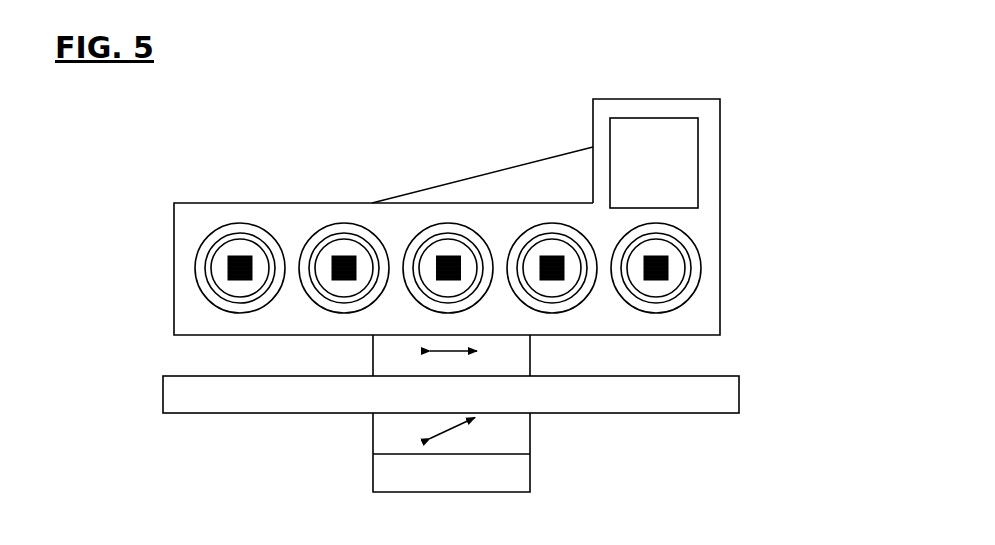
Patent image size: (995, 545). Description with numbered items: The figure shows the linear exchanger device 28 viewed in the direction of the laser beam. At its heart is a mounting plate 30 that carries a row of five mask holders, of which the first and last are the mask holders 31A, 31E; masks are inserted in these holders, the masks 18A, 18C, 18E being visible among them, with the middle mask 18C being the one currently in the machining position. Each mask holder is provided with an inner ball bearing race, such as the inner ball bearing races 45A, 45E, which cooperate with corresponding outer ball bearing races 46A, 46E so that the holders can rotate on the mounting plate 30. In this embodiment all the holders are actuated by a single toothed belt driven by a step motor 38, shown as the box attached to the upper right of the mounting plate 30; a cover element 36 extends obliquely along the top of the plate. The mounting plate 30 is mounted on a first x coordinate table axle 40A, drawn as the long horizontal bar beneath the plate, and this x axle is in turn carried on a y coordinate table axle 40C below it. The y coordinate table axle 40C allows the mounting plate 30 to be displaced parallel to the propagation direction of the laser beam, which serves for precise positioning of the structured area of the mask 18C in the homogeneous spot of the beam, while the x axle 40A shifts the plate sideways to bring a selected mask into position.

The linear exchanger device 28 is at (452, 263).
The mounting plate 30 is at (707, 312).
The cover 36 is at (488, 171).
The step motor 38 is at (650, 133).
The mask 18A is at (238, 256).
The mask 18C is at (448, 256).
The mask 18E is at (667, 273).
The mask holder 31A is at (207, 233).
The mask holder 31E is at (707, 288).
The inner ball bearing race 45A is at (217, 285).
The inner ball bearing race 45E is at (678, 242).
The outer ball bearing race 46A is at (225, 303).
The outer ball bearing race 46E is at (695, 252).
The first x coordinate table axle 40A is at (262, 393).
The y coordinate table axle 40C is at (502, 471).